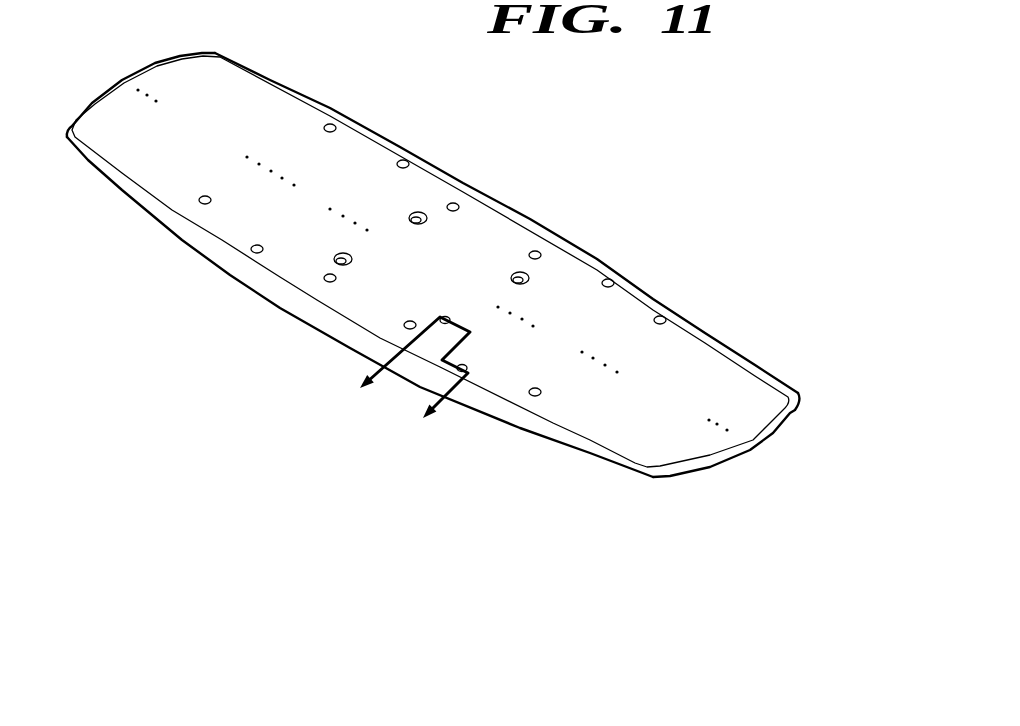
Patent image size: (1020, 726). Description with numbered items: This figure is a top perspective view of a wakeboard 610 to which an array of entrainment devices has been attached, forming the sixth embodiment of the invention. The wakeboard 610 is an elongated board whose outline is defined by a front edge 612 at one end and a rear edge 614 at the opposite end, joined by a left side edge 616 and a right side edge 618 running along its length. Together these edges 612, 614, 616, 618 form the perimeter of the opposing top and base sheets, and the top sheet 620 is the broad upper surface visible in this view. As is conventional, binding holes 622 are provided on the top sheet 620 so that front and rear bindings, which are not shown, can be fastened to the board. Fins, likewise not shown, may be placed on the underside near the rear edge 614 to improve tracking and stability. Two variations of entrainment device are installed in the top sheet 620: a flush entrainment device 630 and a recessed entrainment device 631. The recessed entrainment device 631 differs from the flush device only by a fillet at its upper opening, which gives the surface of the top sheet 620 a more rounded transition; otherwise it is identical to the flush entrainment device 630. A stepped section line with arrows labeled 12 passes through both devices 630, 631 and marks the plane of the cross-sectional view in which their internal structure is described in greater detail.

The wakeboard 610 is at (441, 258).
The front edge 612 is at (122, 75).
The rear edge 614 is at (757, 438).
The left side edge 616 is at (248, 275).
The right side edge 618 is at (588, 255).
The top sheet 620 is at (365, 153).
The binding holes 622 is at (582, 352).
The flush entrainment device 630 is at (465, 367).
The recessed entrainment device 631 is at (447, 317).
The section line 12- 12 is at (391, 385).